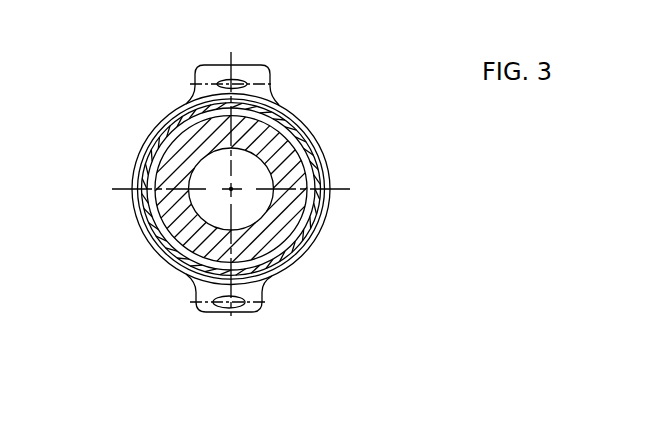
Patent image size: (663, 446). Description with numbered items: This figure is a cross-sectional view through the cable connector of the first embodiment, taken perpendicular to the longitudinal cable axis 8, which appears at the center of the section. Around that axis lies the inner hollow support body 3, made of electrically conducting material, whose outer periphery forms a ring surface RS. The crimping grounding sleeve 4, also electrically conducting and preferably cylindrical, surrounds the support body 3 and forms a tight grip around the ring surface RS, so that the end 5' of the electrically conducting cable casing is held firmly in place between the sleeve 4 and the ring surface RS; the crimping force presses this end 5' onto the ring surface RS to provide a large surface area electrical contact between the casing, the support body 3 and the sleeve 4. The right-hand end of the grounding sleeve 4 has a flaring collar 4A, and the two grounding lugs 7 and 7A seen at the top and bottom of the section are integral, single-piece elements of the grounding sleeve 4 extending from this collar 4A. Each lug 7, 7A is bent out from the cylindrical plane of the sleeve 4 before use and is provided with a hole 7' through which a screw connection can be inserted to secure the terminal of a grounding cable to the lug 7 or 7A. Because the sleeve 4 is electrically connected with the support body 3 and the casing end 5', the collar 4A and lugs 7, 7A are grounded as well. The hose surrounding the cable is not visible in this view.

The inner hollow support body 3 is at (289, 167).
The grounding sleeve 4 is at (316, 177).
The flaring collar 4A is at (296, 118).
The end of the grounding casing 5' is at (273, 189).
The grounding lug 7 is at (251, 74).
The hole 7' is at (219, 193).
The grounding lug 7A is at (252, 295).
The longitudinal cable axis 8 is at (232, 191).
The ring surface RS is at (165, 237).